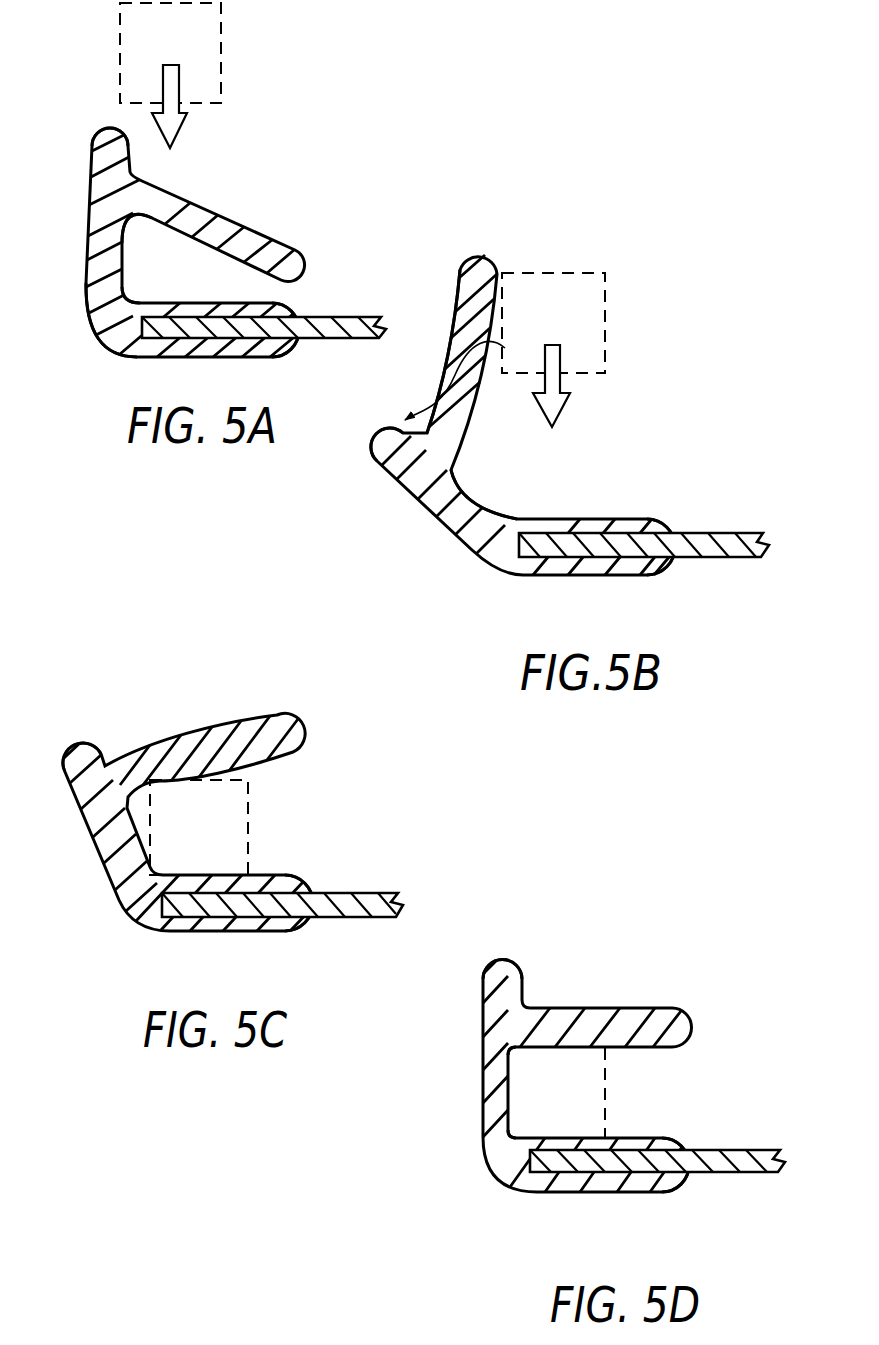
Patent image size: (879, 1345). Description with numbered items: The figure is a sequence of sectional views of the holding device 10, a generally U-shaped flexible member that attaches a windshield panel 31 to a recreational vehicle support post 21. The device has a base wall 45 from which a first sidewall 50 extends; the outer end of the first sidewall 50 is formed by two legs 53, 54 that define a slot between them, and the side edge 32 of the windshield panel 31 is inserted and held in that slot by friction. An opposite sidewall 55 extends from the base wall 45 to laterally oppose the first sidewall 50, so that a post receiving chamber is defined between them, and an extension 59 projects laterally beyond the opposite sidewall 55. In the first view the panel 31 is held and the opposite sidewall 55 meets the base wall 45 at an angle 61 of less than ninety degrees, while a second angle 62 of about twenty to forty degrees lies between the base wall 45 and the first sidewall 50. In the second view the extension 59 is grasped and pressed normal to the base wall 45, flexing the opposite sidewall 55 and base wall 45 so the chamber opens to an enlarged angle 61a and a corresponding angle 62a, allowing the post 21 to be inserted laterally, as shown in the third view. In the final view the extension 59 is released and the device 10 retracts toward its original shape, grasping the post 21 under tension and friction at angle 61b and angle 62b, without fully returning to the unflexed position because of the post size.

In FIG. 5A, the holding device 10 is at (210, 169).
In FIG. 5B, the holding device 10 is at (614, 413).
In FIG. 5C, the holding device 10 is at (108, 909).
In FIG. 5D, the holding device 10 is at (477, 1184).
In FIG. 5A, the upright support post 21 is at (222, 44).
In FIG. 5B, the upright support post 21 is at (606, 298).
In FIG. 5C, the upright support post 21 is at (249, 805).
In FIG. 5D, the upright support post 21 is at (607, 1072).
In FIG. 5A, the windshield panel 31 is at (320, 318).
In FIG. 5B, the windshield panel 31 is at (730, 537).
In FIG. 5C, the windshield panel 31 is at (370, 898).
In FIG. 5D, the windshield panel 31 is at (745, 1158).
In FIG. 5A, the side edge 32 is at (120, 332).
In FIG. 5A, the base wall 45 is at (96, 228).
In FIG. 5B, the base wall 45 is at (460, 513).
In FIG. 5C, the base wall 45 is at (118, 852).
In FIG. 5D, the base wall 45 is at (497, 1080).
In FIG. 5A, the first sidewall 50 is at (227, 347).
In FIG. 5B, the first sidewall 50 is at (633, 565).
In FIG. 5C, the first sidewall 50 is at (272, 922).
In FIG. 5D, the first sidewall 50 is at (643, 1183).
In FIG. 5A, the leg 53 is at (283, 306).
In FIG. 5B, the leg 53 is at (636, 517).
In FIG. 5C, the leg 53 is at (290, 883).
In FIG. 5D, the leg 53 is at (658, 1147).
In FIG. 5A, the leg 54 is at (283, 350).
In FIG. 5B, the leg 54 is at (662, 566).
In FIG. 5C, the leg 54 is at (297, 923).
In FIG. 5D, the leg 54 is at (673, 1183).
In FIG. 5A, the opposite sidewall 55 is at (218, 229).
In FIG. 5B, the opposite sidewall 55 is at (486, 312).
In FIG. 5C, the opposite sidewall 55 is at (222, 737).
In FIG. 5D, the opposite sidewall 55 is at (592, 1020).
In FIG. 5A, the extension 59 is at (94, 137).
In FIG. 5B, the extension 59 is at (381, 455).
In FIG. 5C, the extension 59 is at (72, 745).
In FIG. 5D, the extension 59 is at (497, 967).
In FIG. 5A, the angle 61 is at (147, 226).
In FIG. 5A, the second angle 62 is at (133, 280).
In FIG. 5B, the opened angle 61a is at (467, 440).
In FIG. 5B, the opened second angle 62a is at (494, 497).
In FIG. 5D, the grasping angle 61b is at (530, 1052).
In FIG. 5D, the grasping second angle 62b is at (513, 1108).